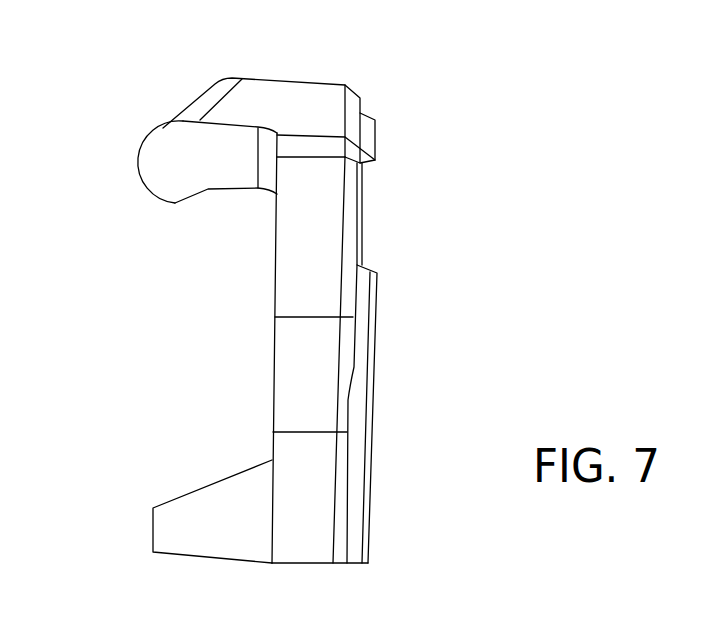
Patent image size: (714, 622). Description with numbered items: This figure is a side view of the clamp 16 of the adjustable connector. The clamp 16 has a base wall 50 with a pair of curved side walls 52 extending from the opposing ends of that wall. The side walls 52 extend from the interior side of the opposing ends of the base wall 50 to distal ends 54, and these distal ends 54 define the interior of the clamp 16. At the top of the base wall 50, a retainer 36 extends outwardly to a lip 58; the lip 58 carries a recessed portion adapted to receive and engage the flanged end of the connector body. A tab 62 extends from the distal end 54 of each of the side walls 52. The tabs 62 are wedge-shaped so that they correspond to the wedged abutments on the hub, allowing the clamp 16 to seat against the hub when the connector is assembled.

The clamp 16 is at (406, 77).
The retainer 36 is at (173, 115).
The base wall 50 is at (280, 80).
The side walls 52 is at (317, 267).
The distal ends 54 is at (293, 563).
The lip 58 is at (173, 207).
The tab 62 is at (152, 520).